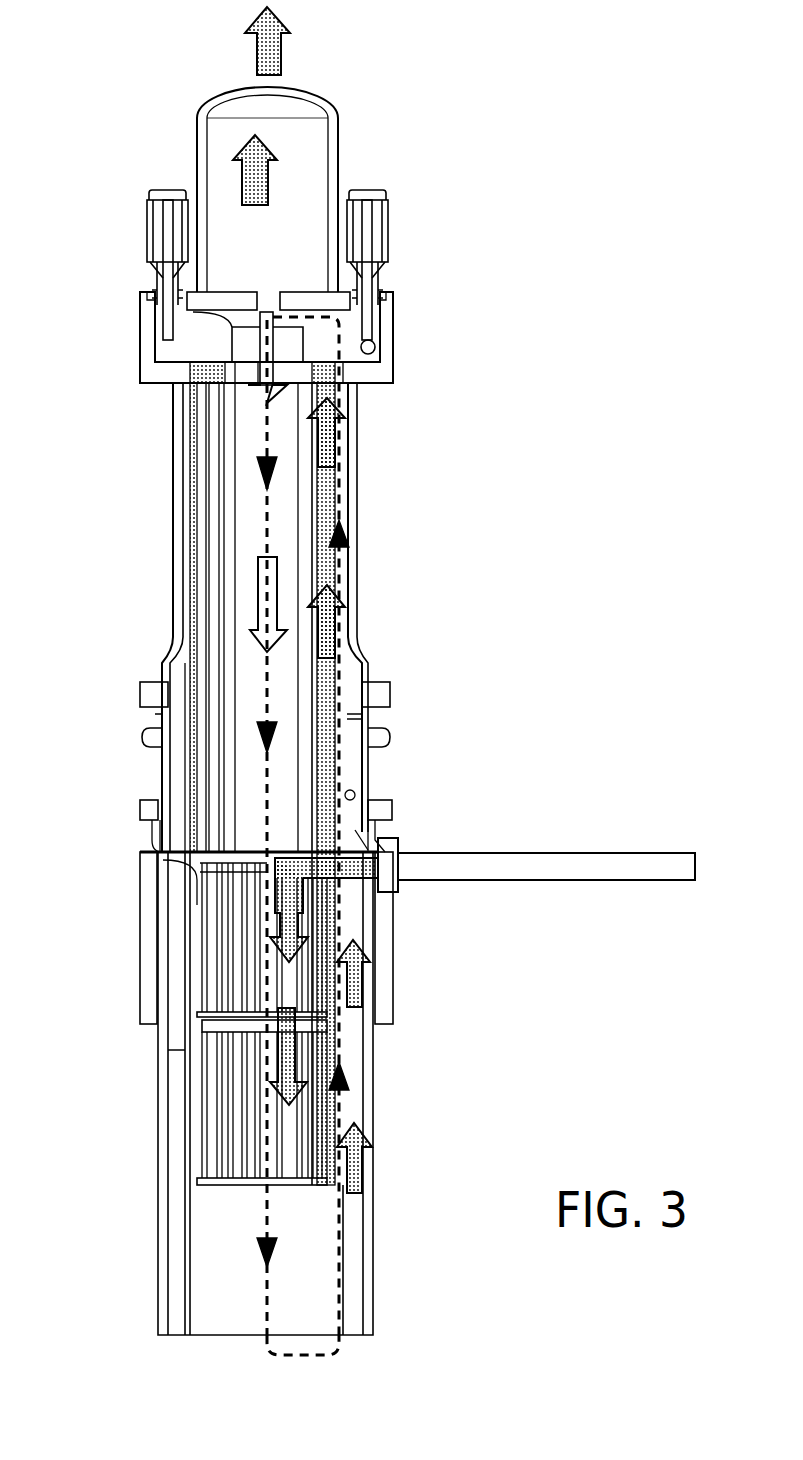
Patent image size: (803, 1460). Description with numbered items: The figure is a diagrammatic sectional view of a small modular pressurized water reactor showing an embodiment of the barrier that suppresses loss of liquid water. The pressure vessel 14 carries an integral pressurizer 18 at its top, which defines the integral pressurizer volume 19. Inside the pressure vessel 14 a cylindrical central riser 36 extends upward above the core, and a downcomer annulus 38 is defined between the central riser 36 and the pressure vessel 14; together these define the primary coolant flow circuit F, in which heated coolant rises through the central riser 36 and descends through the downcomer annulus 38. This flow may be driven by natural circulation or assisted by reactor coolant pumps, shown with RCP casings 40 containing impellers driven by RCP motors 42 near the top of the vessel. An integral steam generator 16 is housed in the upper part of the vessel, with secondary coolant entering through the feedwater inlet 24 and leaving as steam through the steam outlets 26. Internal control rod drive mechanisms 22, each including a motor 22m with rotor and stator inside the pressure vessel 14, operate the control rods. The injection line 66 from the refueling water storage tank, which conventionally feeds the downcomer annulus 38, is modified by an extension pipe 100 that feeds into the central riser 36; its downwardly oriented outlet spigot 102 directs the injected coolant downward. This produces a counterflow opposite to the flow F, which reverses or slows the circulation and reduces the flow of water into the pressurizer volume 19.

The integral pressurizer 18 is at (197, 137).
The integral pressurizer volume 19 is at (230, 178).
The RCP motor 42 is at (167, 230).
The RCP casing 40 is at (160, 322).
The integral steam generator 16 is at (200, 475).
The pressure vessel 14 is at (178, 537).
The downcomer annulus 38 is at (217, 593).
The steam outlet 26 is at (155, 695).
The feedwater inlet 24 is at (155, 740).
The central riser 36 is at (267, 775).
The injection line 66 is at (485, 853).
The extension pipe 100 is at (348, 882).
The outlet spigot 102 is at (307, 903).
The control rod drive mechanism 22 is at (212, 945).
The motor 22m is at (225, 1095).
The primary coolant flow circuit F is at (267, 1155).